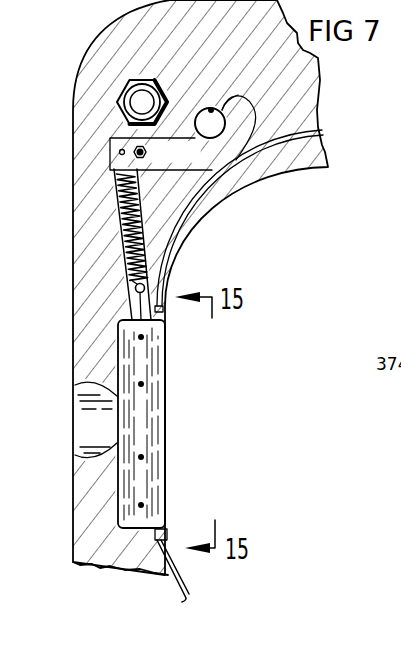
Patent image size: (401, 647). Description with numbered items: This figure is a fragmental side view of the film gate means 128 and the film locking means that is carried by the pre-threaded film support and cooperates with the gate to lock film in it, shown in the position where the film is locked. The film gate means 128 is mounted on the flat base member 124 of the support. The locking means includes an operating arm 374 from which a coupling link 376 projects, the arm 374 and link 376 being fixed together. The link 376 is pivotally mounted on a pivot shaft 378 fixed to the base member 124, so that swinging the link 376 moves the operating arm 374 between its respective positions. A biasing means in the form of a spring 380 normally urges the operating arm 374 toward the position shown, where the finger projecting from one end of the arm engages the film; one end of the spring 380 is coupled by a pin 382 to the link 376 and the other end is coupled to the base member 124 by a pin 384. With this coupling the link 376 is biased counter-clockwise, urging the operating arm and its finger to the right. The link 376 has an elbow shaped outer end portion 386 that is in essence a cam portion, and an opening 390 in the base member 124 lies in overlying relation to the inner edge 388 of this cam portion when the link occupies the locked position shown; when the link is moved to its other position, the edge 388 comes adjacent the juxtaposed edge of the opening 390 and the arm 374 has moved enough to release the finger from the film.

The base member 124 is at (78, 128).
The film gate means 128 is at (176, 386).
The operating arm 374 is at (132, 312).
The coupling link 376 is at (216, 150).
The pivot shaft 378 is at (147, 153).
The spring 380 is at (128, 222).
The pin 382 is at (118, 152).
The pin 384 is at (145, 288).
The elbow shaped outer end portion 386 is at (252, 107).
The inner edge 388 is at (211, 108).
The opening 390 is at (222, 110).